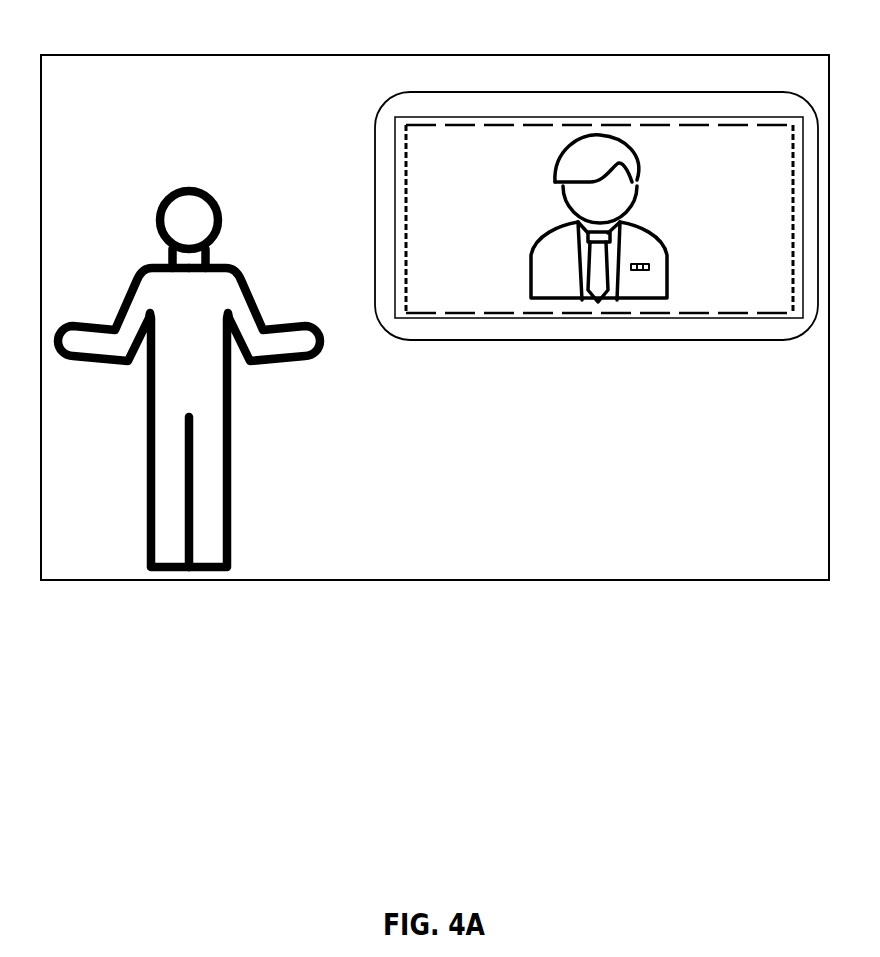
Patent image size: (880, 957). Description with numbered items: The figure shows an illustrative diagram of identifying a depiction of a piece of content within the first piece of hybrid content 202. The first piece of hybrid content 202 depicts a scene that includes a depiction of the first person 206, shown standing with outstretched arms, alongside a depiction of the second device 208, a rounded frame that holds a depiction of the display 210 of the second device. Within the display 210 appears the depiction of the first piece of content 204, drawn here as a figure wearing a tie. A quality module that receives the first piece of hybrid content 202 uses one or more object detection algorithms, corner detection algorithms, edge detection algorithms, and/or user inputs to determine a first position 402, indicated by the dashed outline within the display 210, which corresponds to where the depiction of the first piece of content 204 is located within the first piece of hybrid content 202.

The first piece of hybrid content 202 is at (407, 55).
The depiction of the first piece of content 204 is at (693, 251).
The depiction of the first person 206 is at (210, 192).
The depiction of the second device 208 is at (460, 340).
The depiction of the display of the second device 210 is at (540, 318).
The first position 402 is at (410, 192).